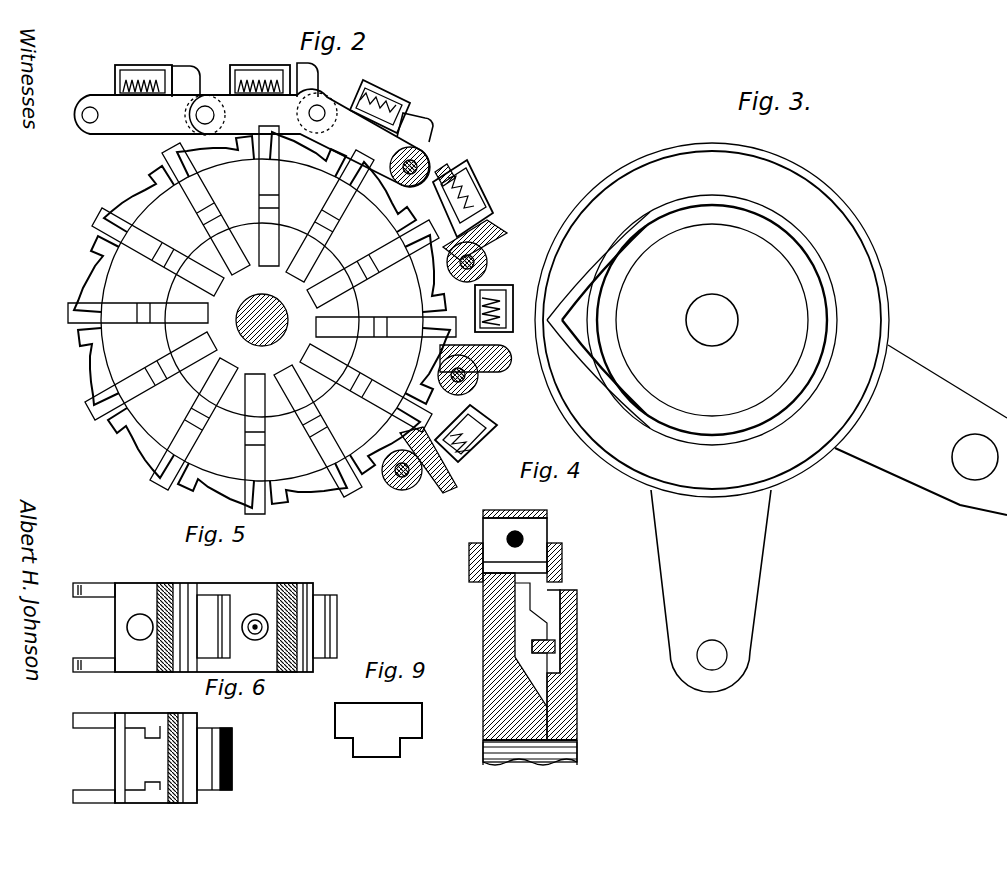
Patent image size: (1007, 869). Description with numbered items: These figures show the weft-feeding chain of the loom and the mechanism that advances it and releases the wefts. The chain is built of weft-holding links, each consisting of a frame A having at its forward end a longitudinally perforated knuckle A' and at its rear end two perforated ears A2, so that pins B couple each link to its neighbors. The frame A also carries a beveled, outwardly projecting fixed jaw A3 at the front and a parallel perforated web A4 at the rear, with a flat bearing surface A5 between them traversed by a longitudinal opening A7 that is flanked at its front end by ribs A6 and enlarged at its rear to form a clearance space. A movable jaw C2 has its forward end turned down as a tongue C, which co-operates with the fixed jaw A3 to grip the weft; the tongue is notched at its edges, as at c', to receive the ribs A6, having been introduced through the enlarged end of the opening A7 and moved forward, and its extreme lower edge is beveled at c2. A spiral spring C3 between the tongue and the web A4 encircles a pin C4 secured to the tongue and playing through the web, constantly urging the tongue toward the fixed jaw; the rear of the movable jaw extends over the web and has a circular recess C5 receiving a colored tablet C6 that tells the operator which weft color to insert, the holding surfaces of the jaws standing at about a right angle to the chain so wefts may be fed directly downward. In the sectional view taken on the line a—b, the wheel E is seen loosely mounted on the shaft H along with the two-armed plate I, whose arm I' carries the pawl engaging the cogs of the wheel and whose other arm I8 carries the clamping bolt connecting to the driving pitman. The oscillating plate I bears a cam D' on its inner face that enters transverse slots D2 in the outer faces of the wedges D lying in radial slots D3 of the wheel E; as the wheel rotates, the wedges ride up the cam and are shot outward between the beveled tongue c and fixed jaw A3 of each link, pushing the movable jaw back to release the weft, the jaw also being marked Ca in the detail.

In FIG. 2, the frame A is at (251, 137).
In FIG. 4, the frame A is at (515, 562).
In FIG. 2, the knuckle A' is at (484, 197).
In FIG. 5, the knuckle A' is at (269, 608).
In FIG. 6, the knuckle A' is at (192, 741).
In FIG. 2, the ears A2 is at (84, 108).
In FIG. 5, the ears A2 is at (81, 623).
In FIG. 6, the ears A2 is at (80, 755).
In FIG. 2, the fixed jaw A3 is at (190, 70).
In FIG. 5, the fixed jaw A3 is at (188, 583).
In FIG. 6, the fixed jaw A3 is at (190, 795).
In FIG. 2, the web A4 is at (428, 230).
In FIG. 6, the web A4 is at (124, 760).
In FIG. 6, the bearing surface A5 is at (157, 722).
In FIG. 6, the rib A6 is at (158, 753).
In FIG. 6, the longitudinal opening A7 is at (142, 758).
In FIG. 2, the section line a is at (185, 158).
In FIG. 2, the pins B is at (85, 128).
In FIG. 2, the section line b is at (236, 292).
In FIG. 2, the tongue C is at (482, 215).
In FIG. 4, the tongue C is at (550, 530).
In FIG. 2, the movable jaw C2 is at (449, 262).
In FIG. 4, the movable jaw C2 is at (515, 554).
In FIG. 2, the spiral spring C3 is at (122, 100).
In FIG. 4, the spiral spring C3 is at (523, 540).
In FIG. 2, the pin C4 is at (507, 172).
In FIG. 4, the pin C4 is at (507, 540).
In FIG. 5, the circular recess C5 is at (262, 615).
In FIG. 5, the colored tablet or wafer C6 is at (140, 614).
In FIG. 2, the spring box cover Ca is at (430, 92).
In FIG. 9, the spring box cover Ca is at (392, 712).
In FIG. 9, the key block c is at (378, 730).
In FIG. 9, the key shoulder c' is at (376, 743).
In FIG. 9, the key stem c2 is at (376, 757).
In FIG. 2, the wedges D is at (262, 320).
In FIG. 4, the wedges D is at (531, 645).
In FIG. 3, the cam D' is at (692, 310).
In FIG. 4, the cam D' is at (570, 649).
In FIG. 2, the transverse slots D2 is at (385, 262).
In FIG. 4, the transverse slots D2 is at (577, 618).
In FIG. 2, the radial slots D3 is at (322, 270).
In FIG. 2, the wheel E is at (262, 320).
In FIG. 4, the wheel E is at (530, 669).
In FIG. 2, the shaft H is at (237, 323).
In FIG. 3, the two-armed plate I is at (712, 320).
In FIG. 4, the two-armed plate I is at (568, 665).
In FIG. 3, the arm I' is at (921, 430).
In FIG. 3, the arm I8 is at (711, 591).